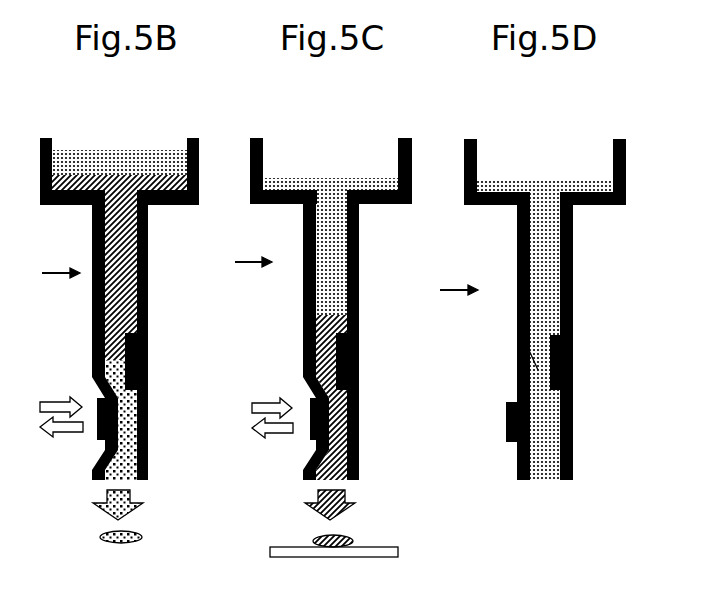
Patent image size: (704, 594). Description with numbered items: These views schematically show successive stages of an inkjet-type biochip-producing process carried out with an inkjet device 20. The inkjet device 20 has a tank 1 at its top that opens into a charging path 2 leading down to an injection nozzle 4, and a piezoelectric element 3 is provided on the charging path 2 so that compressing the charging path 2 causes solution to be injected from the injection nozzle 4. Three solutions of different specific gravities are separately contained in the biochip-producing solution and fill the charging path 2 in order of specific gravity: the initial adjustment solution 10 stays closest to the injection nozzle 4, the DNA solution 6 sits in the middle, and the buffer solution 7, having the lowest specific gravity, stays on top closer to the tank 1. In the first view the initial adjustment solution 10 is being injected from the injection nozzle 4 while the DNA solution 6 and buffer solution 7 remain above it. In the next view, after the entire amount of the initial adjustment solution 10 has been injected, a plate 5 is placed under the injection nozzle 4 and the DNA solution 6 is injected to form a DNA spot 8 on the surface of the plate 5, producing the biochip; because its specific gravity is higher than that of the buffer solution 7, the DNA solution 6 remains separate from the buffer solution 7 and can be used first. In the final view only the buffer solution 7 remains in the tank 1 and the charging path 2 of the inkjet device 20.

In FIG. 5B, the tank 1 is at (45, 138).
In FIG. 5C, the tank 1 is at (255, 138).
In FIG. 5D, the tank 1 is at (466, 139).
In FIG. 5B, the charging path 2 is at (92, 332).
In FIG. 5C, the charging path 2 is at (303, 342).
In FIG. 5D, the charging path 2 is at (517, 343).
In FIG. 5B, the piezoelectric element 3 is at (97, 435).
In FIG. 5C, the piezoelectric element 3 is at (310, 435).
In FIG. 5D, the piezoelectric element 3 is at (506, 425).
In FIG. 5B, the injection nozzle 4 is at (135, 489).
In FIG. 5C, the injection nozzle 4 is at (350, 488).
In FIG. 5D, the injection nozzle 4 is at (553, 483).
In FIG. 5C, the plate 5 is at (395, 552).
In FIG. 5B, the DNA solution 6 is at (135, 178).
In FIG. 5C, the DNA solution 6 is at (360, 448).
In FIG. 5B, the buffer solution 7 is at (105, 162).
In FIG. 5C, the buffer solution 7 is at (338, 190).
In FIG. 5D, the buffer solution 7 is at (552, 190).
In FIG. 5C, the DNA spot 8 is at (308, 538).
In FIG. 5B, the initial adjustment solution 10 is at (148, 456).
In FIG. 5B, the inkjet device 20 is at (43, 273).
In FIG. 5C, the inkjet device 20 is at (236, 263).
In FIG. 5D, the inkjet device 20 is at (442, 290).